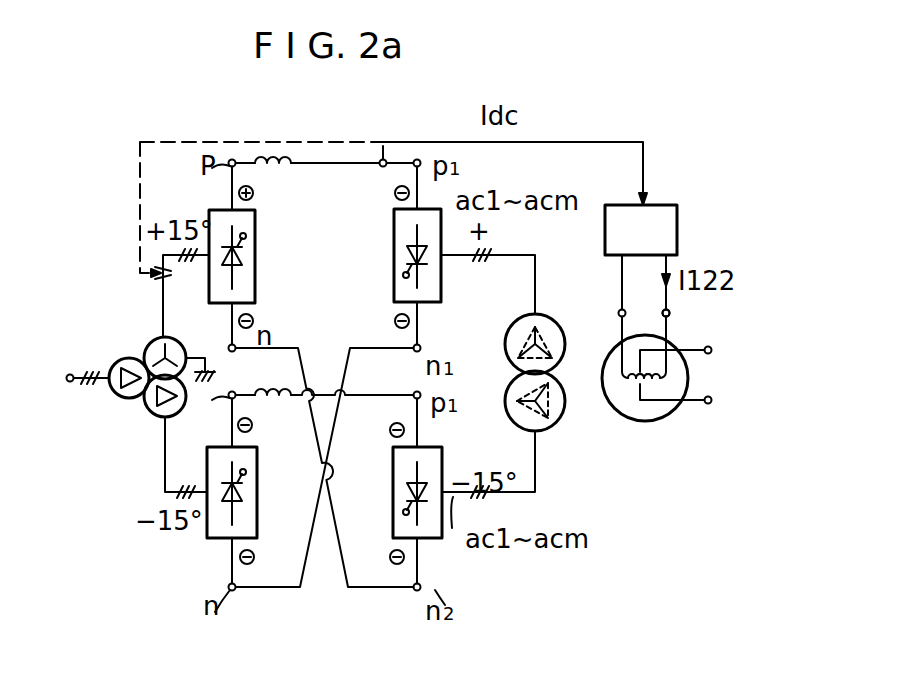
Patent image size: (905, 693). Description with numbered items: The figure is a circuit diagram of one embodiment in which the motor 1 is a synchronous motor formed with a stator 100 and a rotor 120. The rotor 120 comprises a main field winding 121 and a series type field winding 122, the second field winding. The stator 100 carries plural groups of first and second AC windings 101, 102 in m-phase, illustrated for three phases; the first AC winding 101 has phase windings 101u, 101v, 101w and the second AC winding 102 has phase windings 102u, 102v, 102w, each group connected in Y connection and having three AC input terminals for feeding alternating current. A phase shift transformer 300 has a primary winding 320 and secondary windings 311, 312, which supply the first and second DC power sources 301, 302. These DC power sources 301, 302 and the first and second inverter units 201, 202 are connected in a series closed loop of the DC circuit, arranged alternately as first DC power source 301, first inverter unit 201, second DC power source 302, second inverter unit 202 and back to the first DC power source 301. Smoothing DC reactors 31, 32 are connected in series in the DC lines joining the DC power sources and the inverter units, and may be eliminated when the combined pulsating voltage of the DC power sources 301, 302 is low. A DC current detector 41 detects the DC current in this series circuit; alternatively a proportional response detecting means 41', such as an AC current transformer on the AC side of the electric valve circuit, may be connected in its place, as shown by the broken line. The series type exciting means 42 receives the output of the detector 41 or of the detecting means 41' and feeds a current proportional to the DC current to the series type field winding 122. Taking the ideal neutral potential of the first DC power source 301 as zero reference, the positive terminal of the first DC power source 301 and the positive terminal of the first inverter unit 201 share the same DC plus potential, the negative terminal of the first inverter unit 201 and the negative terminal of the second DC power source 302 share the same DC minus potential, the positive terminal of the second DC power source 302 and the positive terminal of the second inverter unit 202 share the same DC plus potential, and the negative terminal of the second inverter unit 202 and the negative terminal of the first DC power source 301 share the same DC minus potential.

The motor 1 is at (605, 522).
The smoothing DC reactor 31 is at (270, 168).
The smoothing DC reactor 32 is at (276, 402).
The DC current detector 41 is at (361, 186).
The proportional response detecting means 41' is at (183, 291).
The series type exciting means 42 is at (665, 229).
The stator 100 is at (537, 388).
The first AC winding 101 is at (553, 321).
The phase winding 101u is at (522, 320).
The phase winding 101v is at (558, 352).
The phase winding 101w is at (512, 350).
The second AC winding 102 is at (556, 432).
The phase winding 102u is at (553, 418).
The phase winding 102v is at (516, 424).
The phase winding 102w is at (510, 398).
The rotor 120 is at (680, 412).
The main field winding 121 is at (642, 420).
The series type field winding 122 is at (652, 340).
The first inverter unit 201 is at (394, 262).
The second inverter unit 202 is at (393, 470).
The phase shift transformer 300 is at (118, 396).
The first DC power source 301 is at (320, 282).
The second DC power source 302 is at (313, 516).
The secondary winding 311 is at (152, 338).
The secondary winding 312 is at (152, 418).
The primary winding 320 is at (124, 400).